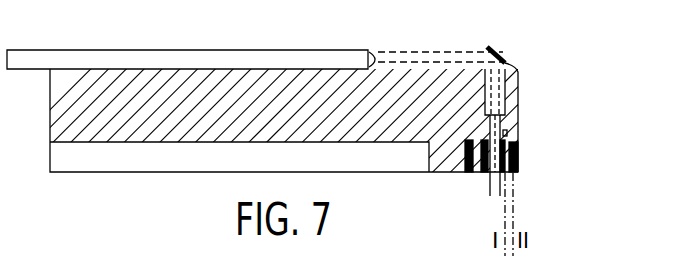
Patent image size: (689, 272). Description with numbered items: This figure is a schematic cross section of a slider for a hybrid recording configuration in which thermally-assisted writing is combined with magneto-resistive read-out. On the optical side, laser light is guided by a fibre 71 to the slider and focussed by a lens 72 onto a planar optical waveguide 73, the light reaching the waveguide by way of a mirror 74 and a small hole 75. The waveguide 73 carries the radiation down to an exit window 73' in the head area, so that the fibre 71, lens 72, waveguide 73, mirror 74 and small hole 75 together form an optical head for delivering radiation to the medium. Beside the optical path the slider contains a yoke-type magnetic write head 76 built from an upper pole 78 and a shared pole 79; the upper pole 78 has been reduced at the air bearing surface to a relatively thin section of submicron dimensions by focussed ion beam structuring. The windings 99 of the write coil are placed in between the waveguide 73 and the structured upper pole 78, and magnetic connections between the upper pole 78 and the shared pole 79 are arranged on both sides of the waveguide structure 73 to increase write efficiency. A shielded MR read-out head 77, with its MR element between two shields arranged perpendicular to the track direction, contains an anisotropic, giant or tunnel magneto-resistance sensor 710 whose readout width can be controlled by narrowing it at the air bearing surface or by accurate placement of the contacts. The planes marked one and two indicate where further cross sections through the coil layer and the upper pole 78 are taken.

The fibre 71 is at (198, 57).
The lens 72 is at (373, 55).
The planar optical waveguide 73 is at (524, 151).
The exit window 73' is at (523, 194).
The mirror 74 is at (505, 55).
The small hole 75 is at (508, 87).
The yoke-type magnetic write head 76 is at (486, 173).
The shielded MR read-out head 77 is at (481, 173).
The upper pole 78 is at (517, 158).
The shared pole 79 is at (490, 173).
The windings of the coil 99 is at (508, 134).
The sensor 710 is at (465, 153).